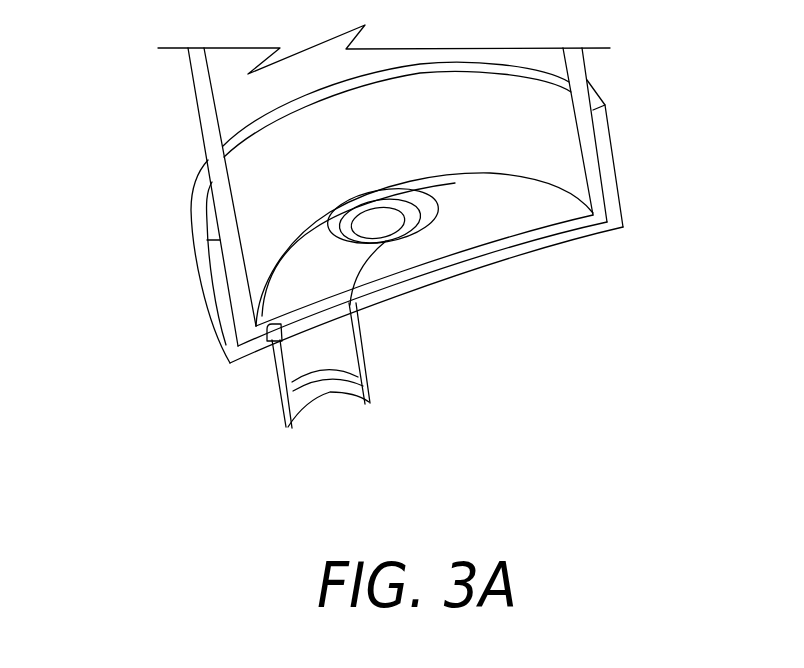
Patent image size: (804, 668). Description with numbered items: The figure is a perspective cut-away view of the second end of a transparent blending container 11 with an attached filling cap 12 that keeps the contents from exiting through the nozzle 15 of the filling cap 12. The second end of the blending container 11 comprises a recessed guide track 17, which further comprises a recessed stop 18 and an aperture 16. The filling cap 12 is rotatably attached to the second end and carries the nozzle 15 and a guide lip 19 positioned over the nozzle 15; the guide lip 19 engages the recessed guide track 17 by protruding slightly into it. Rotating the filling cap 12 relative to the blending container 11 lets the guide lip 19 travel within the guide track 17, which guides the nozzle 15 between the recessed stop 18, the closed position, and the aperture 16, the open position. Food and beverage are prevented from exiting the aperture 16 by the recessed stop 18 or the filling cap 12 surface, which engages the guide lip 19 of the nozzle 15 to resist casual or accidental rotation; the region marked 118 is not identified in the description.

The transparent blending container 11 is at (247, 93).
The filling cap 12 is at (208, 297).
The nozzle 15 is at (291, 425).
The aperture 16 is at (372, 225).
The recessed guide track 17 is at (332, 265).
The recessed stop 18 is at (303, 310).
The guide lip 19 is at (273, 337).
The bowl interior wall 118 is at (490, 223).